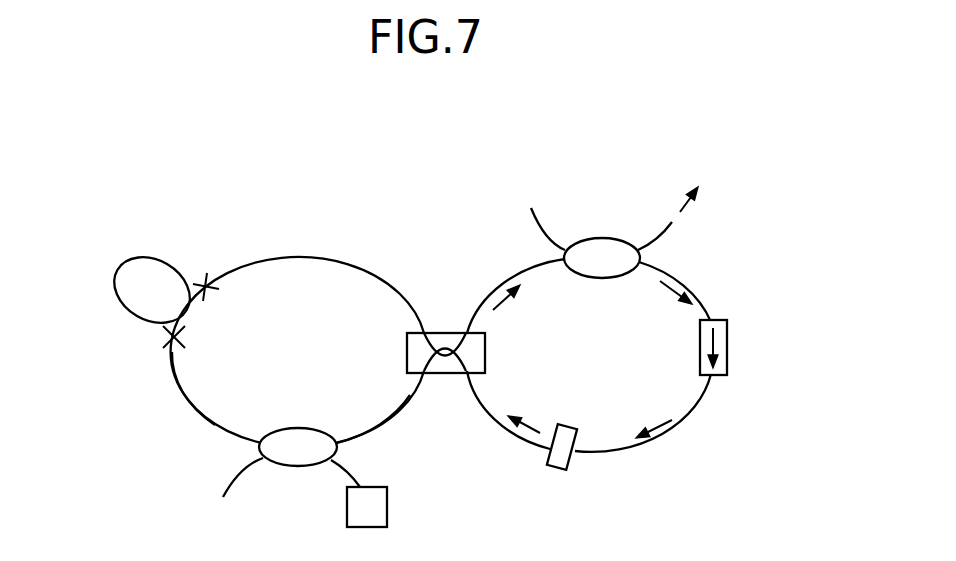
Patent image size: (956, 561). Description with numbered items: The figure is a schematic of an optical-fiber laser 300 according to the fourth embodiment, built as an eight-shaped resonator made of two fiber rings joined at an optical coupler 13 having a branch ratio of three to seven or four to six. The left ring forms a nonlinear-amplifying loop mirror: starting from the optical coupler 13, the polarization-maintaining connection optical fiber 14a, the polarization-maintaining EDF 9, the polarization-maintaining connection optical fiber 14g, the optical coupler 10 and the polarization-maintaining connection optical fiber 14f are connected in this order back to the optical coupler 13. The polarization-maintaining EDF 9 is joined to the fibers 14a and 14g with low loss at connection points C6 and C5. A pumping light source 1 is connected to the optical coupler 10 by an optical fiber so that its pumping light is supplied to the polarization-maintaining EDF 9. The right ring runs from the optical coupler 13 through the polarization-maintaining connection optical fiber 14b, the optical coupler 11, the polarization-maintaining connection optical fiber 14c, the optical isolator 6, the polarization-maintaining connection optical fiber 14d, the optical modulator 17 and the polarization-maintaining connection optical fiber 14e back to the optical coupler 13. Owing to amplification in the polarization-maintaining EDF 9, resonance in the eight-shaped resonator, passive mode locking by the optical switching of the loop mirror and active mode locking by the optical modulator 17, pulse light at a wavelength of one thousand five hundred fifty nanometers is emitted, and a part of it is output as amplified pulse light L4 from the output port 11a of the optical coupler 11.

The optical-fiber laser 300 is at (756, 130).
The pumping light source 1 is at (387, 507).
The optical isolator 6 is at (727, 348).
The polarization-maintaining EDF 9 is at (153, 258).
The optical coupler 10 is at (298, 468).
The optical coupler 11 is at (598, 238).
The output port 11a is at (655, 222).
The optical coupler 13 is at (446, 333).
The polarization-maintaining connection optical fiber 14a is at (328, 257).
The polarization-maintaining connection optical fiber 14b is at (518, 272).
The polarization-maintaining connection optical fiber 14c is at (693, 293).
The polarization-maintaining connection optical fiber 14d is at (622, 455).
The polarization-maintaining connection optical fiber 14e is at (505, 425).
The polarization-maintaining connection optical fiber 14f is at (393, 418).
The polarization-maintaining connection optical fiber 14g is at (188, 404).
The optical modulator 17 is at (560, 470).
The amplified pulse light L4 is at (683, 210).
The connection point C5 is at (150, 344).
The connection point C6 is at (202, 262).